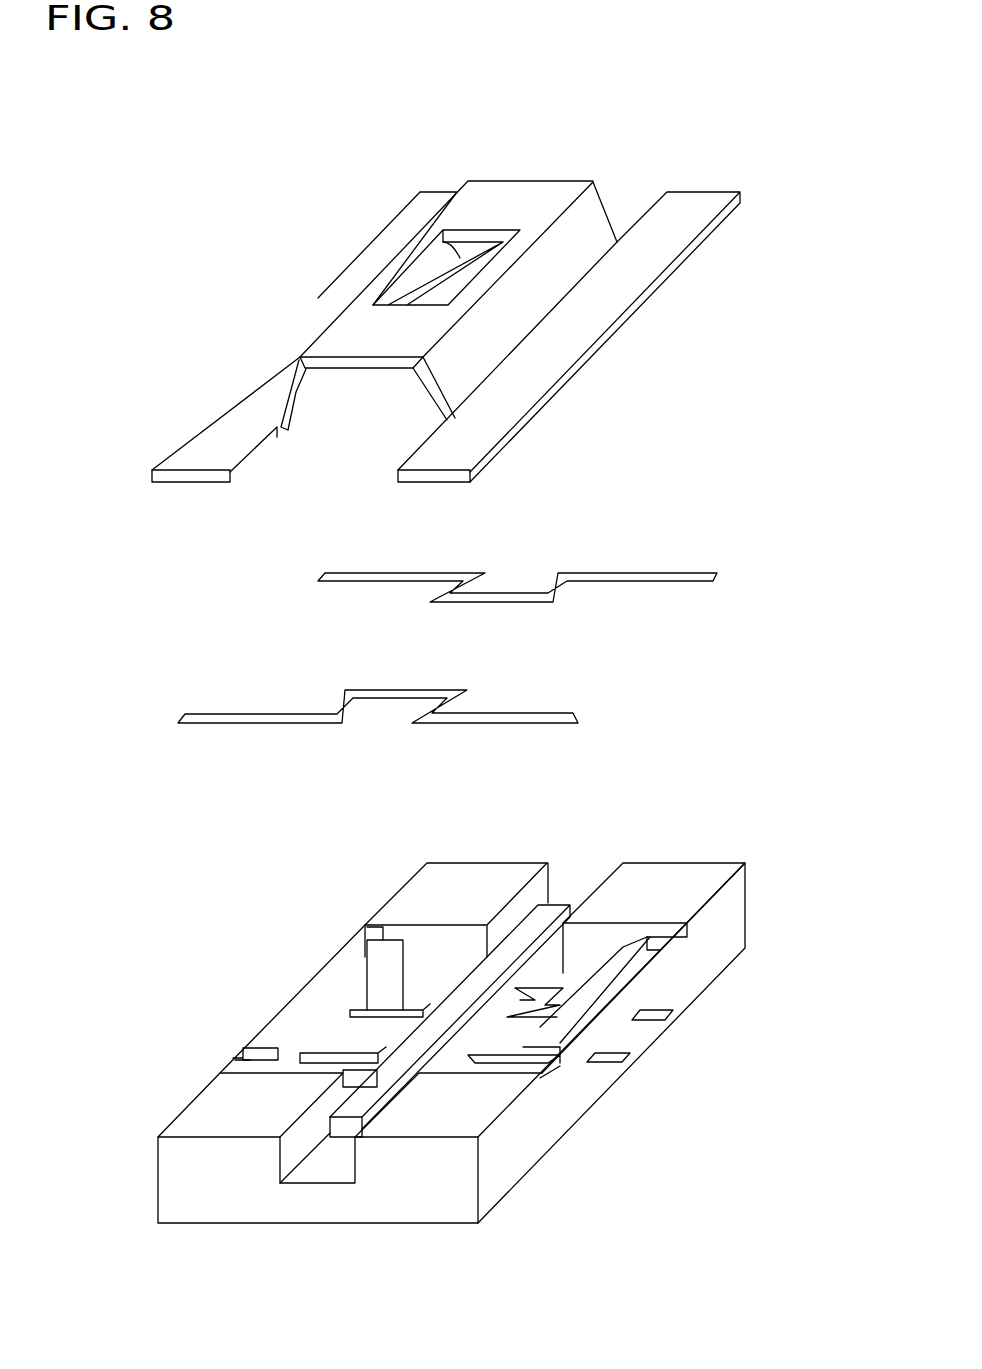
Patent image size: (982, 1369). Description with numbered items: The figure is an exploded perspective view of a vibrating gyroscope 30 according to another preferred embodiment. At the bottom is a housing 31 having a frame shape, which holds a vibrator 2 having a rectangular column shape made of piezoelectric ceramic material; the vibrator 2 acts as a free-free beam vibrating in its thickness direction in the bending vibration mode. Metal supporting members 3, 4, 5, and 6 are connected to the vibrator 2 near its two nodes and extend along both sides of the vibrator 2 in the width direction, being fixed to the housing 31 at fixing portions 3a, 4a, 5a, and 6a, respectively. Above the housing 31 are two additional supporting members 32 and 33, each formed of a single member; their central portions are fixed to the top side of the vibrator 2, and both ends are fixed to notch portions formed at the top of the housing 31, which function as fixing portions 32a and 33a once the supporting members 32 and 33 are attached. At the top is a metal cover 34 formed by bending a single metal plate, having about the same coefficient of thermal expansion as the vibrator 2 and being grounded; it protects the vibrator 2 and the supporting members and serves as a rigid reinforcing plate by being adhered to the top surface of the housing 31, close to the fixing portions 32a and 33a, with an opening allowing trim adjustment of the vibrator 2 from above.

The vibrating gyroscope 30 is at (110, 188).
The metal cover 34 is at (325, 300).
The supporting member 33 is at (245, 712).
The supporting member 32 is at (625, 584).
The housing 31 is at (680, 892).
The vibrator 2 is at (480, 978).
The fixing portion 32a is at (385, 952).
The supporting member 3 is at (382, 942).
The fixing portion 3a is at (345, 1005).
The supporting member 5 is at (302, 1052).
The fixing portion 5a is at (330, 1060).
The fixing portion 33a is at (252, 1066).
The supporting member 4 is at (583, 1066).
The fixing portion 4a is at (630, 1019).
The supporting member 6 is at (507, 1063).
The fixing portion 6a is at (585, 1065).